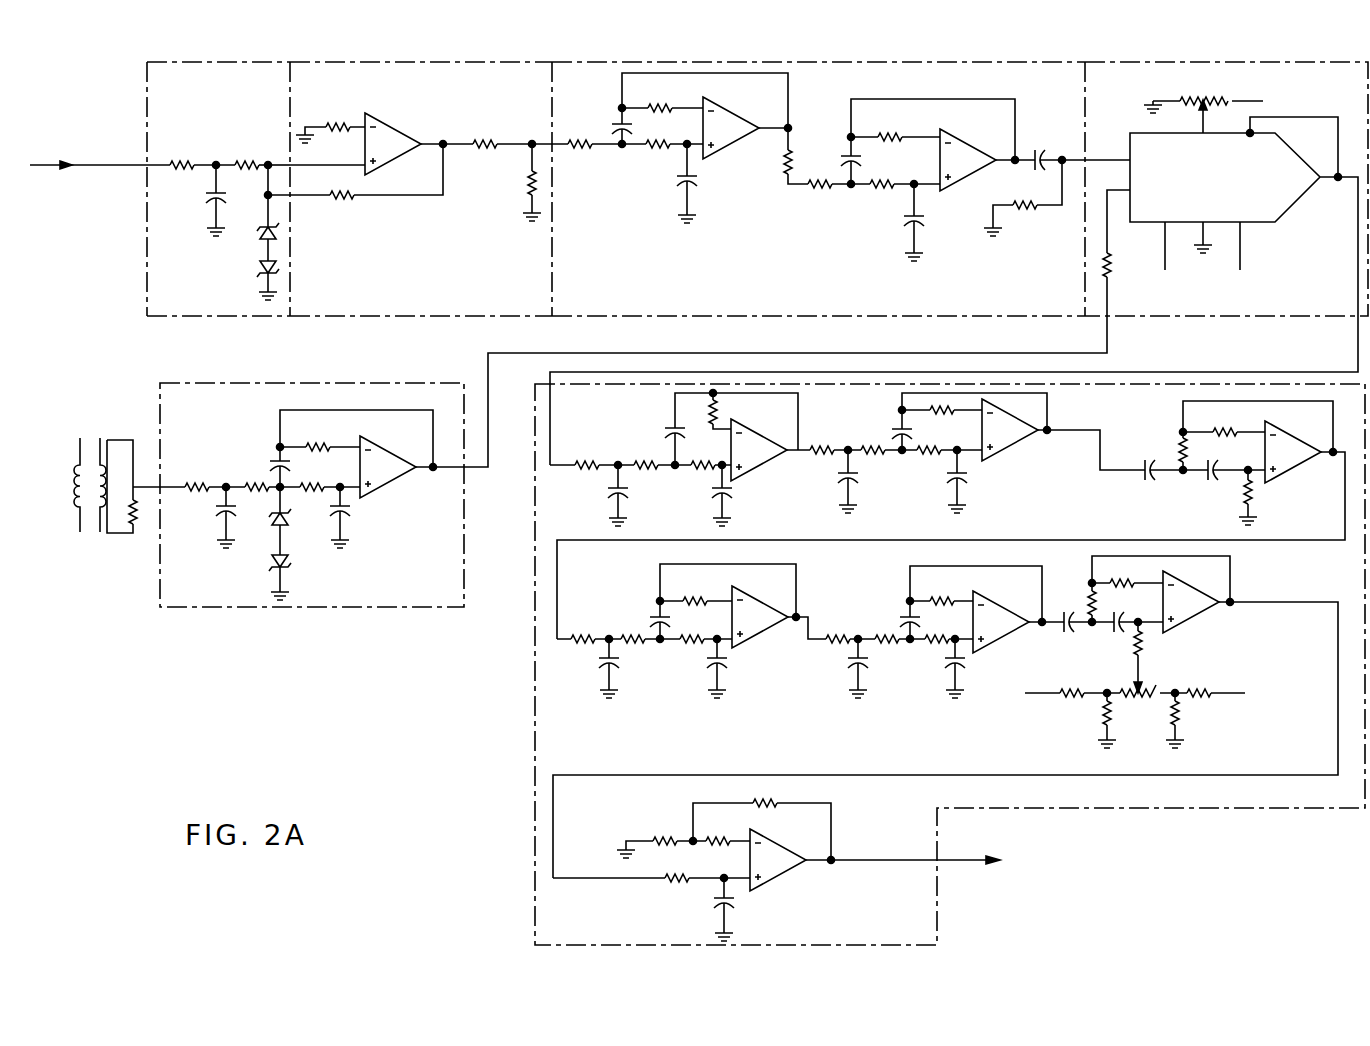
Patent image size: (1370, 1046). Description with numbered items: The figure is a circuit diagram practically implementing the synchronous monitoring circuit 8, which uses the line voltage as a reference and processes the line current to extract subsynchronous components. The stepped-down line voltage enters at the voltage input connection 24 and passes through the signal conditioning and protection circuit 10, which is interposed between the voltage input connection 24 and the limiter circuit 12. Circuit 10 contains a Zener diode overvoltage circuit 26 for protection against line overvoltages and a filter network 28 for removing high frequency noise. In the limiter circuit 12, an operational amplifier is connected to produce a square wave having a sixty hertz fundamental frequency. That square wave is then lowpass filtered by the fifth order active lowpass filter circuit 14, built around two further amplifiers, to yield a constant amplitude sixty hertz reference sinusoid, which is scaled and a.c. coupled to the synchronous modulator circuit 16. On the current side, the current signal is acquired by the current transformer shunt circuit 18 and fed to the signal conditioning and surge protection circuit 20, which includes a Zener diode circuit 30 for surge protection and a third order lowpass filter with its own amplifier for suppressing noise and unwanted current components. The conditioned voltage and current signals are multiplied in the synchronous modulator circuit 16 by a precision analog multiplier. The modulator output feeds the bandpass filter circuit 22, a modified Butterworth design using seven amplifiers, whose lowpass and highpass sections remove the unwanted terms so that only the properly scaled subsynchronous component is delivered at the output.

The synchronous monitoring circuit 8 is at (484, 690).
The signal conditioning and protection circuit 10 is at (158, 278).
The limiter circuit 12 is at (380, 315).
The lowpass filter circuit 14 is at (642, 310).
The synchronous modulator circuit 16 is at (1190, 315).
The current transformer shunt circuit 18 is at (93, 535).
The signal conditioning and surge protection circuit 20 is at (230, 600).
The bandpass filter circuit 22 is at (545, 752).
The voltage input connection 24 is at (122, 170).
The Zener diode overvoltage circuit 26 is at (262, 245).
The filter network 28 is at (203, 175).
The Zener diode circuit 30 is at (283, 543).